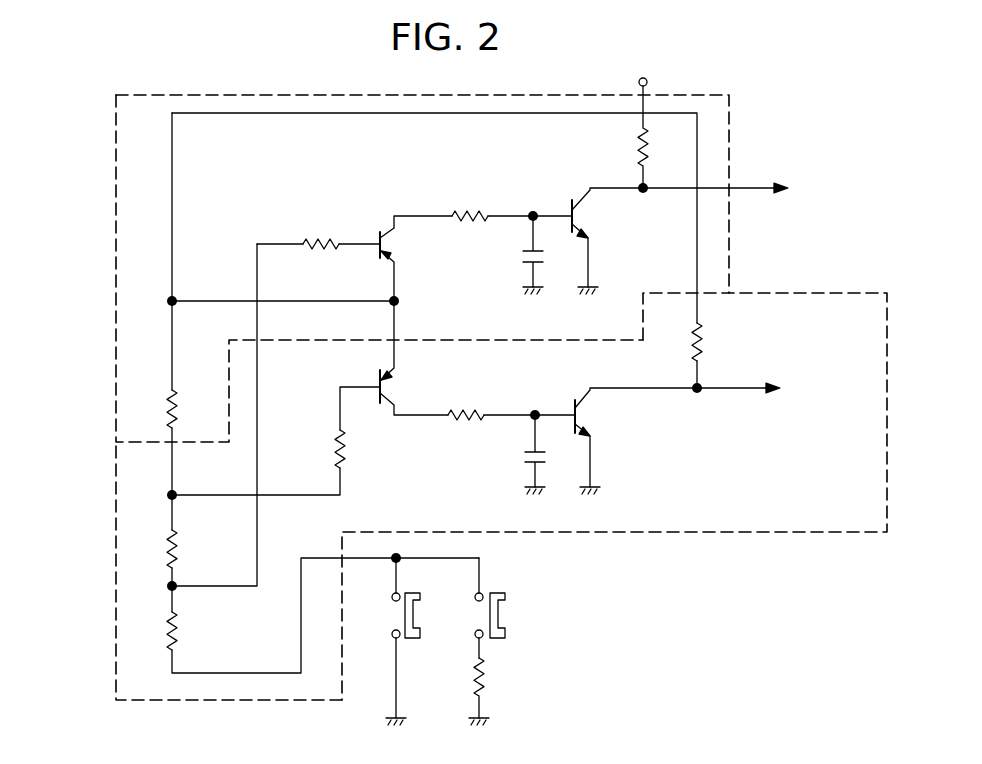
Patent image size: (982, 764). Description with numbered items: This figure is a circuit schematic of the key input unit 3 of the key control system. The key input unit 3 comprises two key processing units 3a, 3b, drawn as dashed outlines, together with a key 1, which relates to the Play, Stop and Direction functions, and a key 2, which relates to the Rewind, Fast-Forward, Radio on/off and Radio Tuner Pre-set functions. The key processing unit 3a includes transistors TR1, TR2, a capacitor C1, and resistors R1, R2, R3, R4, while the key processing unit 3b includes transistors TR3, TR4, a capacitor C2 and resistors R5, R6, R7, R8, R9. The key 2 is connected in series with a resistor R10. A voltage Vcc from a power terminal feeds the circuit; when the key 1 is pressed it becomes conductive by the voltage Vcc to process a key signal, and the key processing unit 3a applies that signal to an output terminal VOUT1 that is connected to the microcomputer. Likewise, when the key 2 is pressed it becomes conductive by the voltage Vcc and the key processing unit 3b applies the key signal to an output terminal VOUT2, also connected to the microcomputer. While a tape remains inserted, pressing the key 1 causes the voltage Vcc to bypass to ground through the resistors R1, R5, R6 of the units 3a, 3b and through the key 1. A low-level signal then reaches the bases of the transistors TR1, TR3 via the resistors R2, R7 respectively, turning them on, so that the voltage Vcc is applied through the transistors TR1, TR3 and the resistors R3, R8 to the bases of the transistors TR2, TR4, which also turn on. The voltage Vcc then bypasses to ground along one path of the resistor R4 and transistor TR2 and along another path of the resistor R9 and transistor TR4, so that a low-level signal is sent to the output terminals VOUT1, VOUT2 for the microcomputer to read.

The key 1 is at (420, 594).
The key 2 is at (505, 598).
The key input unit 3 is at (113, 294).
The key processing unit 3a is at (732, 133).
The key processing unit 3b is at (762, 291).
The resistor R1 is at (189, 409).
The resistor R2 is at (320, 230).
The resistor R3 is at (470, 201).
The resistor R4 is at (659, 137).
The resistor R5 is at (191, 549).
The resistor R6 is at (191, 631).
The resistor R7 is at (358, 449).
The resistor R8 is at (471, 402).
The resistor R9 is at (714, 342).
The resistor R10 is at (503, 691).
The capacitor C1 is at (550, 255).
The capacitor C2 is at (551, 454).
The transistor TR1 is at (416, 258).
The transistor TR2 is at (676, 241).
The transistor TR3 is at (414, 358).
The transistor TR4 is at (673, 441).
The voltage Vcc is at (643, 68).
The output terminal VOUT1 is at (826, 189).
The output terminal VOUT2 is at (817, 390).